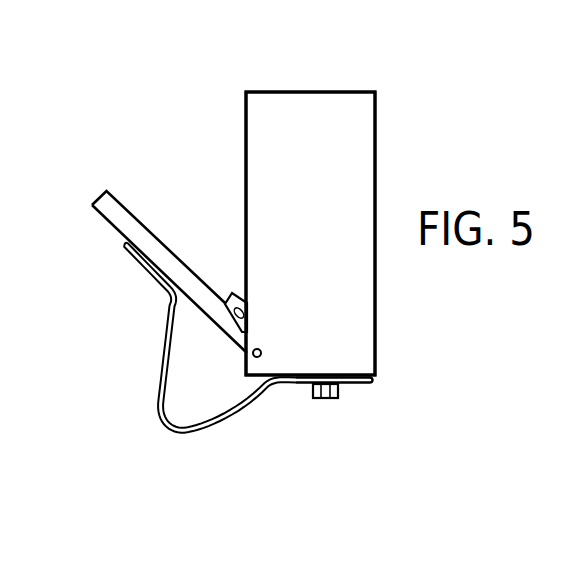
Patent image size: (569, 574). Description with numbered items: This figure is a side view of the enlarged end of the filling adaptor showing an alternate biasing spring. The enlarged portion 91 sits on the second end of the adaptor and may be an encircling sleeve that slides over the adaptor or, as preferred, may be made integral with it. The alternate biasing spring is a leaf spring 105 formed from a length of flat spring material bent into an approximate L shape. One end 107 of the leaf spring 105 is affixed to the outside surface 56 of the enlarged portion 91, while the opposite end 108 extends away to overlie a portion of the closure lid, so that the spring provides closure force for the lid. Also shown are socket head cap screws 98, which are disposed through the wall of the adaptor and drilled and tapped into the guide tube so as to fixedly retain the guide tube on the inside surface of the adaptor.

The outer surface 56 is at (311, 92).
The enlarged portion 91 is at (323, 316).
The opposite end 108 is at (145, 270).
The leaf spring 105 is at (165, 425).
The socket head cap screws 98 is at (318, 398).
The one end 107 is at (357, 385).